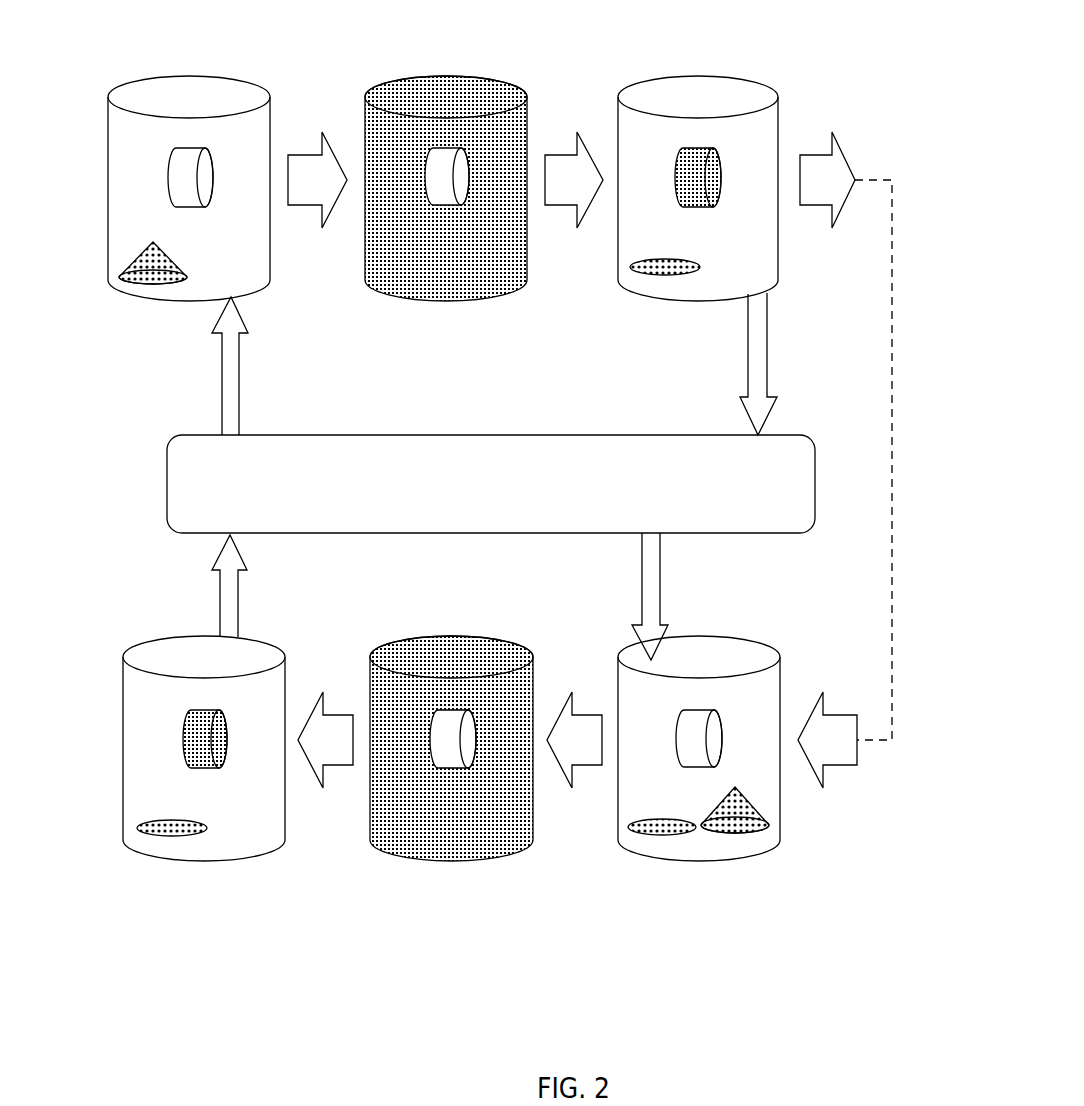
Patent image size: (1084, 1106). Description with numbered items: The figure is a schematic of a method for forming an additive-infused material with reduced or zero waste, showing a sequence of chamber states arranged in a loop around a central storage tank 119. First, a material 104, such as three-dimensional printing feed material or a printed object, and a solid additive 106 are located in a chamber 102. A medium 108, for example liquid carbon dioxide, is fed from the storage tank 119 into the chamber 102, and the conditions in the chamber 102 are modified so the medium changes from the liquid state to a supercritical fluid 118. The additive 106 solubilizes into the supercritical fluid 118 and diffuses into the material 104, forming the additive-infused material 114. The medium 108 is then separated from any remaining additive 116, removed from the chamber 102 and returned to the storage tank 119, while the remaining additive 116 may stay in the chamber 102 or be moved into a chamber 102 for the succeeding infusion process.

The chamber 102 is at (231, 90).
The material 104 is at (176, 173).
The additive 106 is at (140, 283).
The medium 108 is at (240, 413).
The additive-infused material 114 is at (690, 167).
The remaining additive 116 is at (665, 276).
The supercritical fluid 118 is at (403, 268).
The storage tank 119 is at (509, 497).